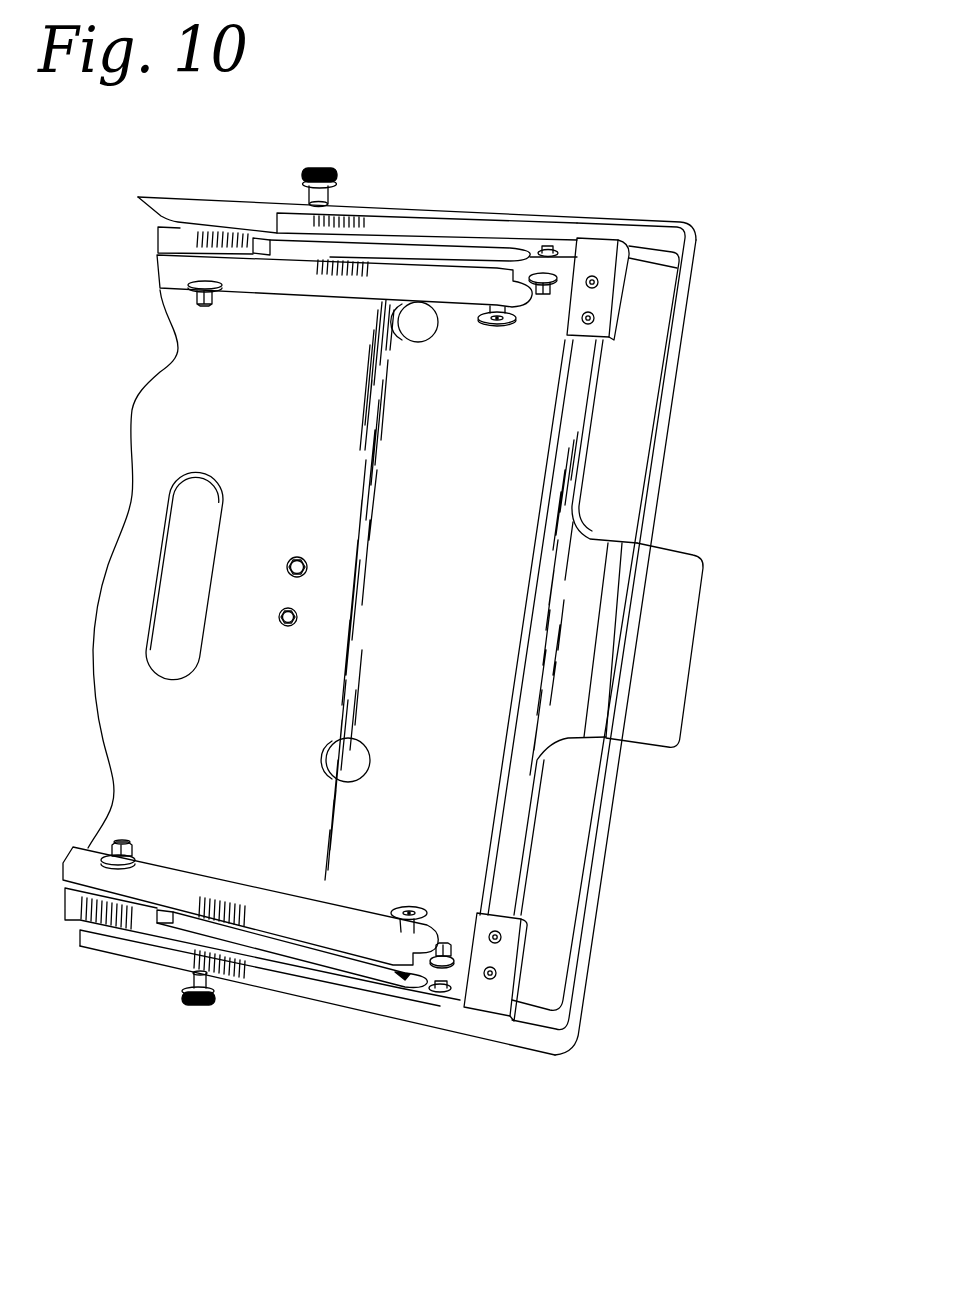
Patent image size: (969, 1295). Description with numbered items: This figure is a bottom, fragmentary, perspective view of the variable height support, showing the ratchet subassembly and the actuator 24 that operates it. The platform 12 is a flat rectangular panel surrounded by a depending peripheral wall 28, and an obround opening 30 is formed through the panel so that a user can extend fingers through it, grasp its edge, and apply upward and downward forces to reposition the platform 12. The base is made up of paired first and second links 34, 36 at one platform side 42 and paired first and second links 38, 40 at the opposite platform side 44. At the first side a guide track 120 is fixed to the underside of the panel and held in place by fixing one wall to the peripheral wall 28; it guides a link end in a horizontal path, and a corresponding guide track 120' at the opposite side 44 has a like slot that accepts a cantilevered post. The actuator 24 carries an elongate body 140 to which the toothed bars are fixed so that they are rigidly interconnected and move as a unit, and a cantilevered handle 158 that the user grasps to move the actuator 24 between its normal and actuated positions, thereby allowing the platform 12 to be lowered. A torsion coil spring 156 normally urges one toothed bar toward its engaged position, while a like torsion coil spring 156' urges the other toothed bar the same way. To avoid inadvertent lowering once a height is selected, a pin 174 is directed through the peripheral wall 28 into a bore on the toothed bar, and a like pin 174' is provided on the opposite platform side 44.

The platform 12 is at (428, 639).
The actuator 24 is at (708, 657).
The peripheral wall 28 is at (668, 458).
The obround opening 30 is at (165, 549).
The first link 34 is at (188, 235).
The second link 36 is at (357, 297).
The first link 38 is at (133, 921).
The second link 40 is at (197, 883).
The platform side 42 is at (490, 208).
The platform side 44 is at (373, 1010).
The guide track 120 is at (427, 162).
The guide track 120' is at (260, 1025).
The elongate body 140 is at (583, 603).
The torsion coil spring 156 is at (579, 212).
The torsion coil spring 156' is at (461, 1036).
The cantilevered handle 158 is at (672, 607).
The pin 174 is at (362, 149).
The pin 174' is at (180, 1035).